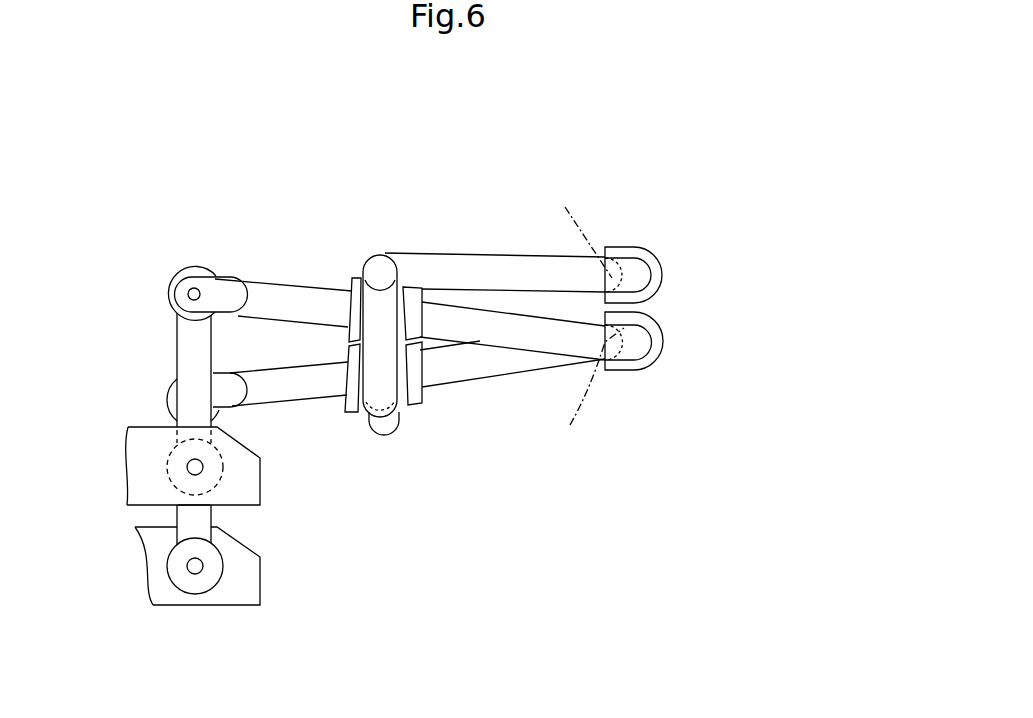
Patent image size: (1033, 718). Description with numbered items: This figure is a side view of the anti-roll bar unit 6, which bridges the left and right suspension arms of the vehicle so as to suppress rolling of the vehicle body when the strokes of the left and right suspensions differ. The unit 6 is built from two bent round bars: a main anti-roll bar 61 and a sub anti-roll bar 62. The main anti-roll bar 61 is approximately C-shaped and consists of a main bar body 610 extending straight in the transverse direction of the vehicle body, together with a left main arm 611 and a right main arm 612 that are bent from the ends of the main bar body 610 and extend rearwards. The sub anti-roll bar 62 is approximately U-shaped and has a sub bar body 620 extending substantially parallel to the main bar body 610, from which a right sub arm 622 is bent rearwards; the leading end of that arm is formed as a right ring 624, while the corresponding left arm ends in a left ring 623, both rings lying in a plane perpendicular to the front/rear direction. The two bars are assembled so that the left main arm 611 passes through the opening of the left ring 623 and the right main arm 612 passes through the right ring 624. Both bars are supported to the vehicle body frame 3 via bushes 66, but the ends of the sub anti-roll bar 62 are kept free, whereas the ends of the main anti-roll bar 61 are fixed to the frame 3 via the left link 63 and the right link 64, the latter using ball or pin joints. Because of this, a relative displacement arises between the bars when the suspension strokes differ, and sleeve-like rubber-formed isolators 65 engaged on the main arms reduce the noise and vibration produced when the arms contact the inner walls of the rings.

The anti-roll bar unit 6 is at (345, 148).
The vehicle body frame 3 is at (152, 495).
The main anti-roll bar 61 is at (605, 390).
The sub anti-roll bar 62 is at (618, 203).
The left link 63 is at (205, 515).
The right link 64 is at (190, 356).
The rubber-formed isolator 65 is at (402, 307).
The bush 66 is at (633, 243).
The main bar body 610 is at (588, 391).
The left main arm 611 is at (486, 368).
The right main arm 612 is at (273, 295).
The sub bar body 620 is at (584, 229).
The right sub arm 622 is at (512, 263).
The left ring 623 is at (385, 428).
The right ring 624 is at (373, 317).